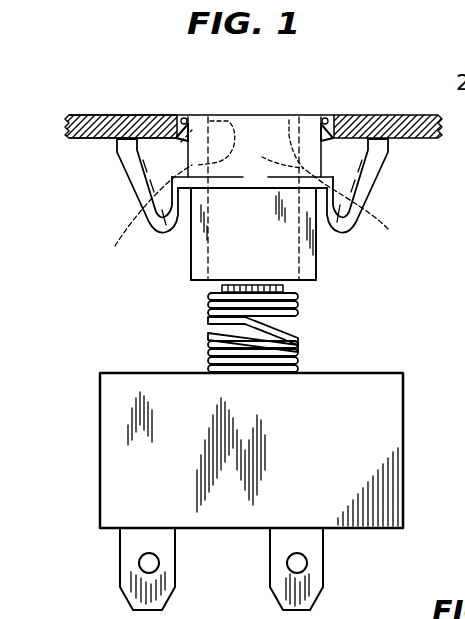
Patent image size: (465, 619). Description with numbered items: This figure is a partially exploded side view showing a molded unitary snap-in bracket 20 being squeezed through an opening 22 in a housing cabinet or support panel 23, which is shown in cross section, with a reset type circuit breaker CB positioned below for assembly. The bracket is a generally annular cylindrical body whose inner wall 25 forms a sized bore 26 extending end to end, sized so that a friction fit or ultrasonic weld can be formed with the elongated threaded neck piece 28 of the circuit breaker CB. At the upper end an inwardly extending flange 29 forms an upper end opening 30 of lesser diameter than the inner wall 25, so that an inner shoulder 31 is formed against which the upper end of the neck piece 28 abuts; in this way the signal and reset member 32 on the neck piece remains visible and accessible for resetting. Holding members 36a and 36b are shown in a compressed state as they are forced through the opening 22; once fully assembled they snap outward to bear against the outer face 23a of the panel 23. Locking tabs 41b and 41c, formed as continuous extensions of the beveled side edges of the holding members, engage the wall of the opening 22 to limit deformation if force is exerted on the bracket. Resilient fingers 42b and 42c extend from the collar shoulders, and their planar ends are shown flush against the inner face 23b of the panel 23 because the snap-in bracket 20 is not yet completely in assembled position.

The snap-in bracket 20 is at (178, 265).
The opening 22 is at (357, 114).
The support panel 23 is at (58, 125).
The outer face 23a is at (107, 113).
The inner face 23b is at (91, 139).
The inner wall 25 is at (230, 143).
The bore 26 is at (268, 250).
The neck piece 28 is at (208, 318).
The flange 29 is at (213, 112).
The upper end opening 30 is at (242, 113).
The inner shoulder 31 is at (252, 175).
The signal and reset member 32 is at (214, 289).
The holding member 36a is at (178, 114).
The holding member 36b is at (333, 118).
The locking tab 41b is at (138, 215).
The locking tab 41c is at (360, 207).
The resilient finger 42b is at (115, 185).
The resilient finger 42c is at (388, 182).
The circuit breaker CB is at (82, 443).